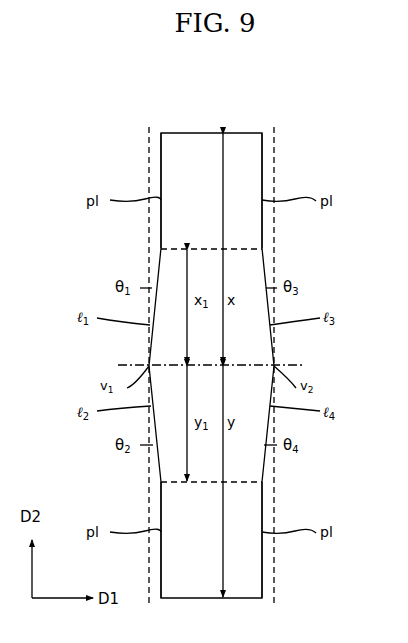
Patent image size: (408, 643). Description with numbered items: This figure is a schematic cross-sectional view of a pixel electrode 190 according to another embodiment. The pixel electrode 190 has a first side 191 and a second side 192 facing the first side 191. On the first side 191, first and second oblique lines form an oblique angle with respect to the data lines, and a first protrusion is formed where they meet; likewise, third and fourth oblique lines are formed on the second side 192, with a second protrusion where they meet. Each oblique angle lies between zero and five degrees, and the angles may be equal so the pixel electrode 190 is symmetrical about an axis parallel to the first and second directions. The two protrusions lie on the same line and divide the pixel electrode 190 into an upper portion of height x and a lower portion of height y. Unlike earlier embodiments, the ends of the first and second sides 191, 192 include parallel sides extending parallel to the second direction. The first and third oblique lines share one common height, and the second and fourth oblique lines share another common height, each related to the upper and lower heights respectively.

The pixel electrode 190 is at (256, 100).
The first side 191 is at (153, 173).
The second side 192 is at (268, 172).